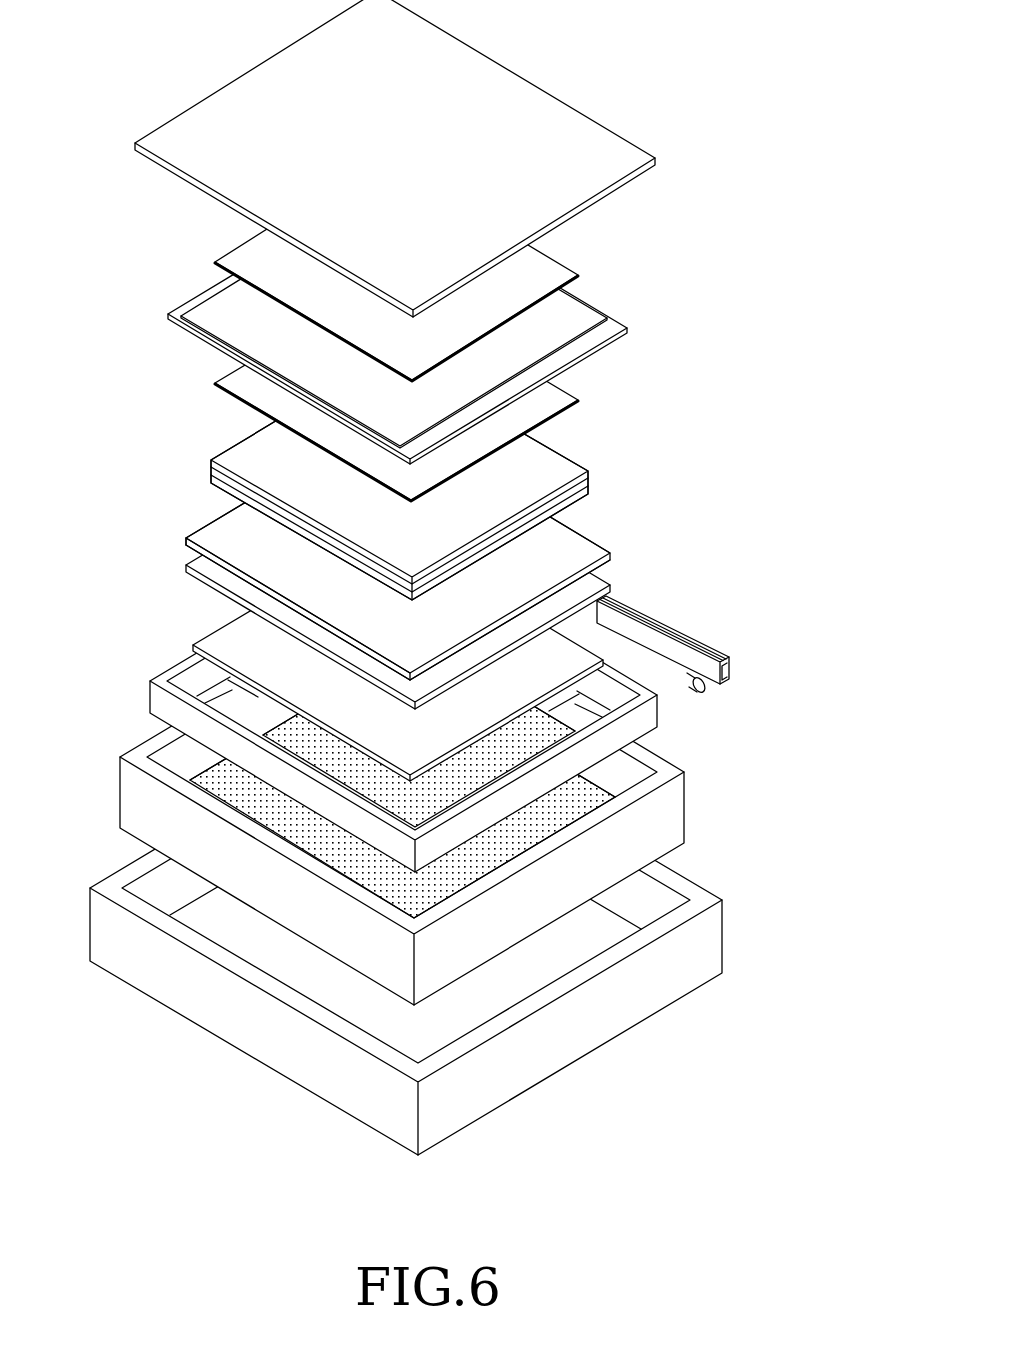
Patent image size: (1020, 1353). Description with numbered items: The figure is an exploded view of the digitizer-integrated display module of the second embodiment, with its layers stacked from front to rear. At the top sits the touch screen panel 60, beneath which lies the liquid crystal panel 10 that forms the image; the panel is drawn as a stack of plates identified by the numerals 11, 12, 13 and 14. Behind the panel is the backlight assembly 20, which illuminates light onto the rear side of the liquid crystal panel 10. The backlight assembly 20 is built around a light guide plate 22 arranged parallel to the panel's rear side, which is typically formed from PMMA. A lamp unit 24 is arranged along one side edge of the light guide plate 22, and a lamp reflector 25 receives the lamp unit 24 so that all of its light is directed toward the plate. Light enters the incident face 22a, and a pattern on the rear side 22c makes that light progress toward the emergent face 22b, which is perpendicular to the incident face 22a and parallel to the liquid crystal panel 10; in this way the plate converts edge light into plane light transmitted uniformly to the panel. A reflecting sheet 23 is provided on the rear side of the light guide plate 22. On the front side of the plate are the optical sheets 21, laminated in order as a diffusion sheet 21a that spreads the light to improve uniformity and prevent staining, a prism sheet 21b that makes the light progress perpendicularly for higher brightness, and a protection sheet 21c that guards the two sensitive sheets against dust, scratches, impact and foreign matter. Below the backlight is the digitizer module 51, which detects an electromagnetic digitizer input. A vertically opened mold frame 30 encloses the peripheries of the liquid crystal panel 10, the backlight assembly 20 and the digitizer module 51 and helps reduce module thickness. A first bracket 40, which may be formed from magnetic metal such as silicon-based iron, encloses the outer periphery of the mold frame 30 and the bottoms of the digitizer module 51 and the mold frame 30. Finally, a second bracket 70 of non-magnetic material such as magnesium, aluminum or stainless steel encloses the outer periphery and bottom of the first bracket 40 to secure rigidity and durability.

The liquid crystal panel 10 is at (473, 329).
The first substrate 11 is at (612, 332).
The second substrate 12 is at (593, 313).
The upper polarizer 13 is at (556, 272).
The lower polarizer 14 is at (557, 397).
The backlight assembly 20 is at (431, 531).
The optical sheets 21 is at (404, 477).
The diffusion sheet 21a is at (212, 480).
The prism sheet 21b is at (215, 468).
The protection sheet 21c is at (225, 455).
The light guide plate 22 is at (404, 549).
The incident face 22a is at (604, 534).
The emergent face 22b is at (212, 535).
The rear side 22c is at (208, 566).
The reflecting sheet 23 is at (595, 585).
The lamp unit 24 is at (618, 604).
The lamp reflector 25 is at (663, 633).
The mold frame 30 is at (648, 718).
The first bracket 40 is at (665, 818).
The digitizer module 51 is at (228, 637).
The touch screen panel 60 is at (635, 180).
The second bracket 70 is at (708, 945).